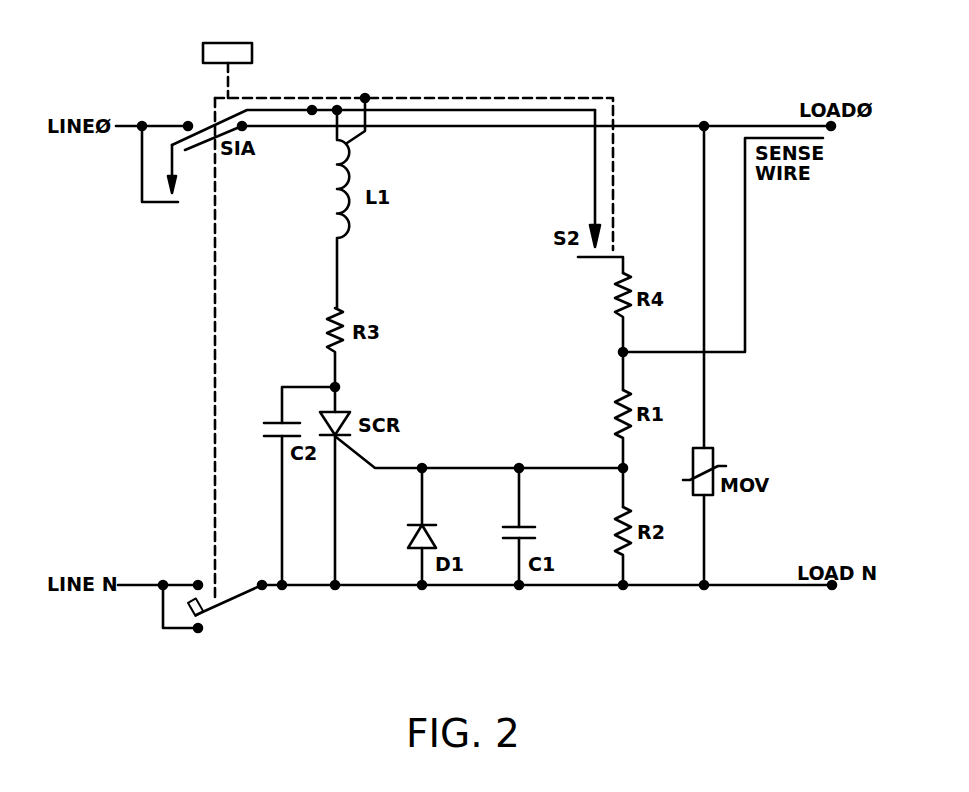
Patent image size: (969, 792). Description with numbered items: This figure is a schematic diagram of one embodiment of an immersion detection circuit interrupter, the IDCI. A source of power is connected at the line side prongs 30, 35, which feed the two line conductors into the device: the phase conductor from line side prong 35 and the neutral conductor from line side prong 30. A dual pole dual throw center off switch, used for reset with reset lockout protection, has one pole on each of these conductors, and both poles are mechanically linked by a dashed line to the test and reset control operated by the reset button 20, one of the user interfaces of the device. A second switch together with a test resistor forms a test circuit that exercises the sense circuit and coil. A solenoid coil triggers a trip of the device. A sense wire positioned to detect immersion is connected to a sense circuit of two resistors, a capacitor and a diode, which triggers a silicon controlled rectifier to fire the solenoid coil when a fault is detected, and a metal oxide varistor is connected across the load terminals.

The reset button 20 is at (222, 53).
The line side prong 30 is at (208, 591).
The line side prong 35 is at (143, 138).